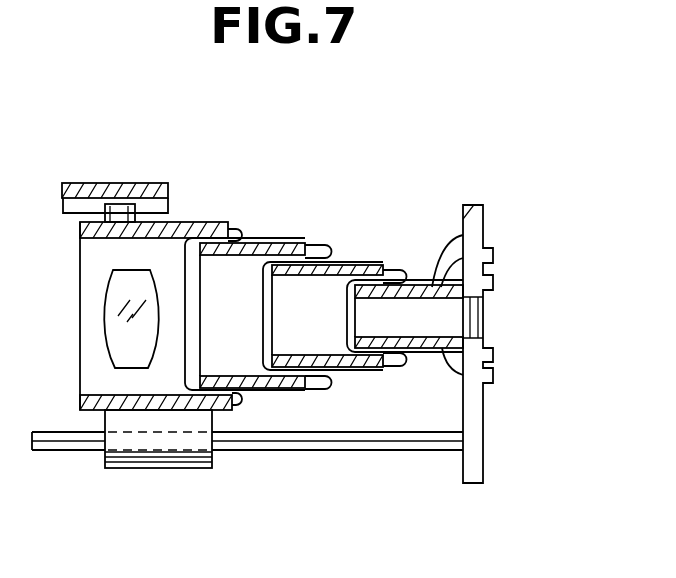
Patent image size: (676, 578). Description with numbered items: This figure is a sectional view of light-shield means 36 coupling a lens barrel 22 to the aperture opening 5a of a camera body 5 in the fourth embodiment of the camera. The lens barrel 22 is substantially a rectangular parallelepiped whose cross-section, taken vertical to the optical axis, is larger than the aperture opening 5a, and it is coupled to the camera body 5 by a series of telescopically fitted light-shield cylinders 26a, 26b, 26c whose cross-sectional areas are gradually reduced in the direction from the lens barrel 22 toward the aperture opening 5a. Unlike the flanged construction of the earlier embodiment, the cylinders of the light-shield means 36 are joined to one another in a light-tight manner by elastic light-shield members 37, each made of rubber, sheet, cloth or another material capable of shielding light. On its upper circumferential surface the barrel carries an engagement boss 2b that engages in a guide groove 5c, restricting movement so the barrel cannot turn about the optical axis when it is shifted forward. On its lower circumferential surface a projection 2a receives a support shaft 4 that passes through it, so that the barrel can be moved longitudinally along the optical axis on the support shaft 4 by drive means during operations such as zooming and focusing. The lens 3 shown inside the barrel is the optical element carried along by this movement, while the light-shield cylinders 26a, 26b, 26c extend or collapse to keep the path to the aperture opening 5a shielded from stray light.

The projection 2a is at (170, 458).
The engagement boss 2b is at (127, 210).
The lens 3 is at (120, 343).
The support shaft 4 is at (63, 450).
The camera body 5 is at (480, 413).
The aperture opening 5a is at (484, 298).
The guide groove 5c is at (90, 205).
The lens barrel 22 is at (209, 222).
The light-shield cylinder 26a is at (288, 262).
The light-shield cylinder 26b is at (367, 265).
The light-shield cylinder 26c is at (470, 234).
The light-shield means 36 is at (355, 391).
The elastic light-shield member 37 is at (240, 229).